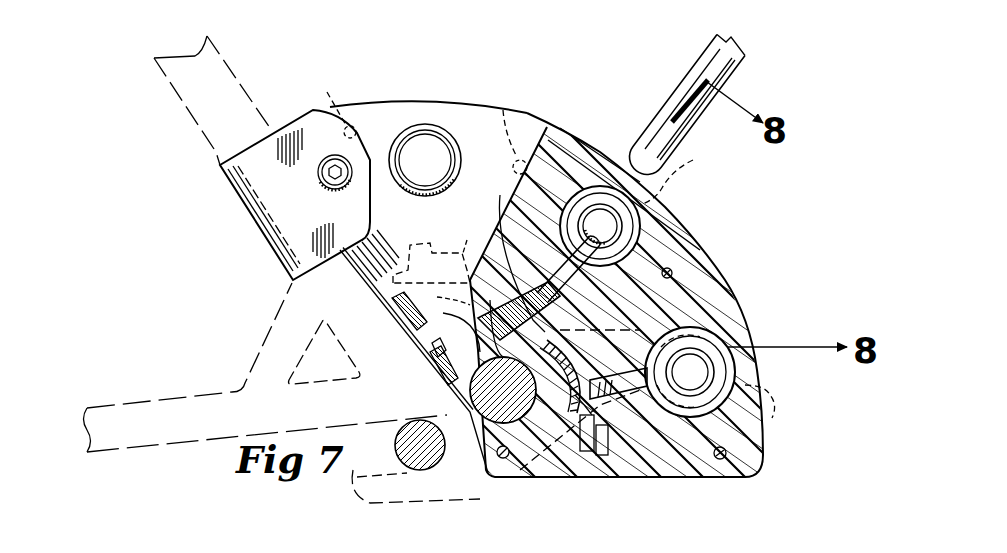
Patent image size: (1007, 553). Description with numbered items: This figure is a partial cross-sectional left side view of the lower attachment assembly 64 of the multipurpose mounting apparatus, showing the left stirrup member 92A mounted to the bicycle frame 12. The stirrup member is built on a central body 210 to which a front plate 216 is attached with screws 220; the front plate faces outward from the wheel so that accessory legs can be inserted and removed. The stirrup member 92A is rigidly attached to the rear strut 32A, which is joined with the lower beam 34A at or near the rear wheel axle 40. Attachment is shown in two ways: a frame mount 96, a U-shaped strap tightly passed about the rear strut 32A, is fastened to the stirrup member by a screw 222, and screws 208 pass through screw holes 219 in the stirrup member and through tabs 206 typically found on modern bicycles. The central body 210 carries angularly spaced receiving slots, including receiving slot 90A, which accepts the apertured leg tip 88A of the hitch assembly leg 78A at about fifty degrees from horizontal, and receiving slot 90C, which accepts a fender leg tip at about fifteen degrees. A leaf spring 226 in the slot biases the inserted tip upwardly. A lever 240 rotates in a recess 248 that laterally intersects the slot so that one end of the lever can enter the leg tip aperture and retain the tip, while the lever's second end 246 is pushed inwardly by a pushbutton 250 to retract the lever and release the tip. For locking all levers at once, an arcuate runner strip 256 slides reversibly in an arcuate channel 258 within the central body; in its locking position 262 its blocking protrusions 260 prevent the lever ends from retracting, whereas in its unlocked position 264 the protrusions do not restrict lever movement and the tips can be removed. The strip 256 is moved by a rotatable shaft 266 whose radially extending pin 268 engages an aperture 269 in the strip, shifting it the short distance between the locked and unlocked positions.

The frame 12 is at (165, 84).
The lower attachment assembly 64 is at (273, 103).
The left stirrup member 92A is at (300, 107).
The screws 220 is at (776, 452).
The front plate 216 is at (412, 112).
The pushbutton 250 is at (431, 150).
The lever 240 is at (593, 150).
The leg tip 88A is at (628, 155).
The hitch assembly leg 78A is at (742, 44).
The rear strut 32A is at (220, 147).
The frame mount 96 is at (240, 193).
The screw 222 is at (333, 173).
The recess 248 is at (430, 242).
The blocking protrusions 260 is at (457, 240).
The arcuate runner strip 256 is at (613, 483).
The locking position 262 is at (568, 263).
The receiving slot 90A is at (683, 172).
The second end 246 is at (640, 205).
The tabs 206 is at (373, 291).
The radially extending pin 268 is at (453, 321).
The screws 208 is at (405, 320).
The screw holes 219 is at (432, 350).
The unlocked position 264 is at (712, 296).
The central body 210 is at (722, 310).
The lower beam 34A is at (120, 410).
The aperture 269 is at (577, 327).
The receiving slot 90C is at (772, 418).
The rear wheel axle 40 is at (397, 441).
The rotatable shaft 266 is at (480, 443).
The spring 226 is at (503, 459).
The arcuate channel 258 is at (588, 453).